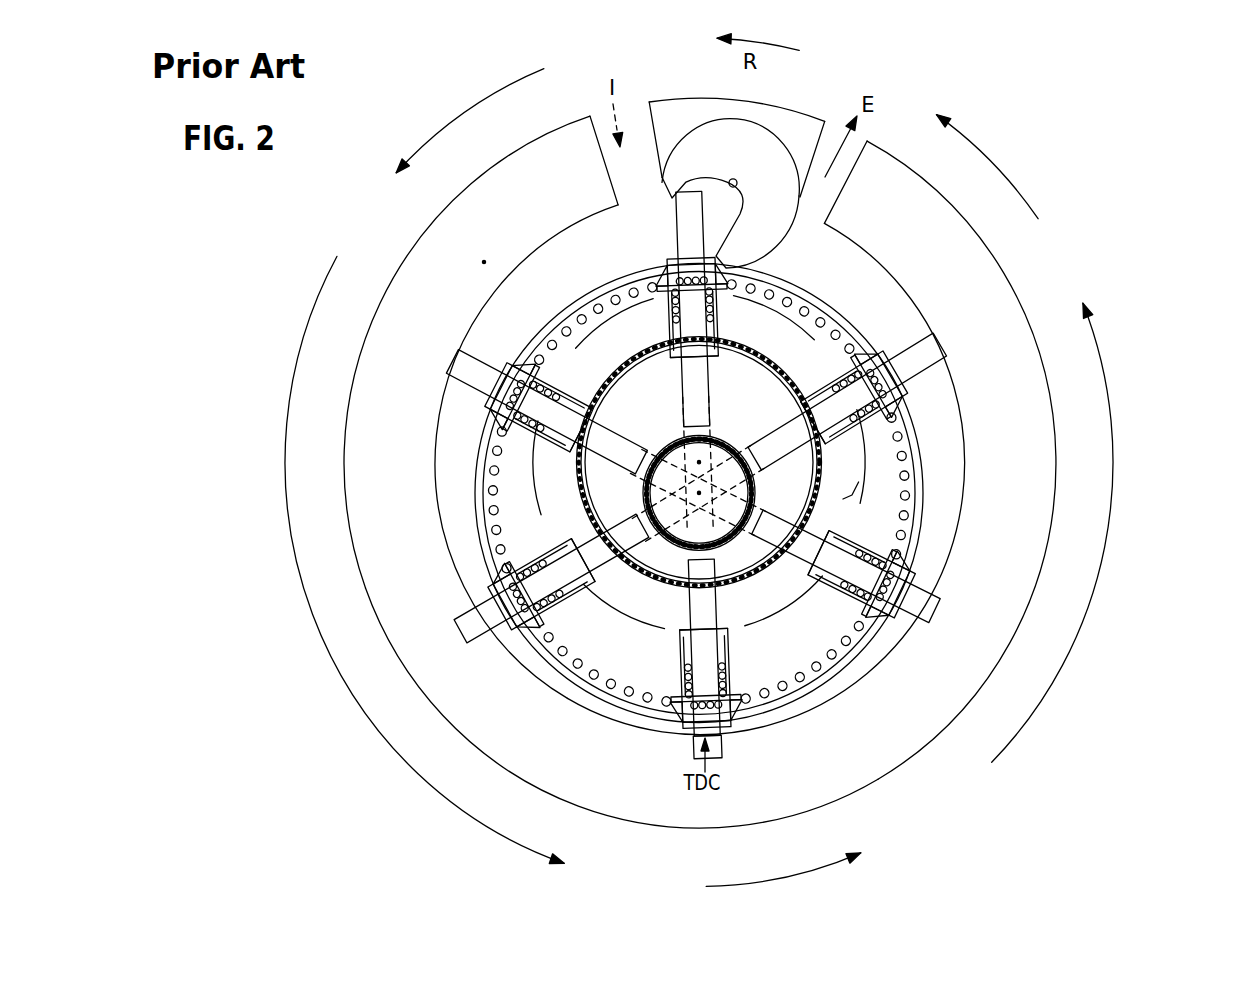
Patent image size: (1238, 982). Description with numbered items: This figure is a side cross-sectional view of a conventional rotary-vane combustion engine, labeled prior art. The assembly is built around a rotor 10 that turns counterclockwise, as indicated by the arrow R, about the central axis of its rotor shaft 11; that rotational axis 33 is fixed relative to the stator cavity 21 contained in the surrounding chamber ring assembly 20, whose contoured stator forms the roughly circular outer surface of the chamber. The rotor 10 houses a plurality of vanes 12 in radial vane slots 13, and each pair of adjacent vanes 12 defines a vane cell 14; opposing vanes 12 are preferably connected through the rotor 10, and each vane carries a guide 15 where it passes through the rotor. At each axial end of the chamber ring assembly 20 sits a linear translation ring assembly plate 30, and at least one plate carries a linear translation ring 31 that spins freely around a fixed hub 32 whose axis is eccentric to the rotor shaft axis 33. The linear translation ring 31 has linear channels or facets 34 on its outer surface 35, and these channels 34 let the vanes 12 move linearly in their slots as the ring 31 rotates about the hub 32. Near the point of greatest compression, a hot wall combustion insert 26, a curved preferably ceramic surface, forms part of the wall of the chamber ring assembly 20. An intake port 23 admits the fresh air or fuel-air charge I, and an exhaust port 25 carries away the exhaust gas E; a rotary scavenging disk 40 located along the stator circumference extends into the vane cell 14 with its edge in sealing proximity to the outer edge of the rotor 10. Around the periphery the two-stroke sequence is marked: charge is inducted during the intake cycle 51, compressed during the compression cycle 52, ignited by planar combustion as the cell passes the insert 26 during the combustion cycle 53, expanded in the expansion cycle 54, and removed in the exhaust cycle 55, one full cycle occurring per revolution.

The rotor 10 is at (507, 480).
The rotor shaft 11 is at (655, 496).
The vane 12 is at (907, 613).
The vane slot 13 is at (705, 381).
The vane cell 14 is at (452, 436).
The piston guide 15 is at (718, 622).
The chamber ring assembly 20 is at (985, 298).
The stator cavity 21 is at (487, 296).
The intake port 23 is at (627, 183).
The exhaust port 25 is at (813, 200).
The hot wall combustion insert 26 is at (762, 738).
The linear translation ring assembly plate 30 is at (780, 614).
The linear translation ring 31 is at (850, 457).
The fixed hub 32 is at (760, 350).
The axis of rotor shaft 33 is at (699, 461).
The linear channel 34 is at (858, 488).
The outer surface 35 is at (662, 632).
The rotary scavenging disk 40 is at (767, 133).
The intake cycle 51 is at (372, 132).
The compression cycle 52 is at (365, 559).
The combustion cycle 53 is at (826, 856).
The expansion cycle 54 is at (1180, 595).
The exhaust cycle 55 is at (1102, 160).